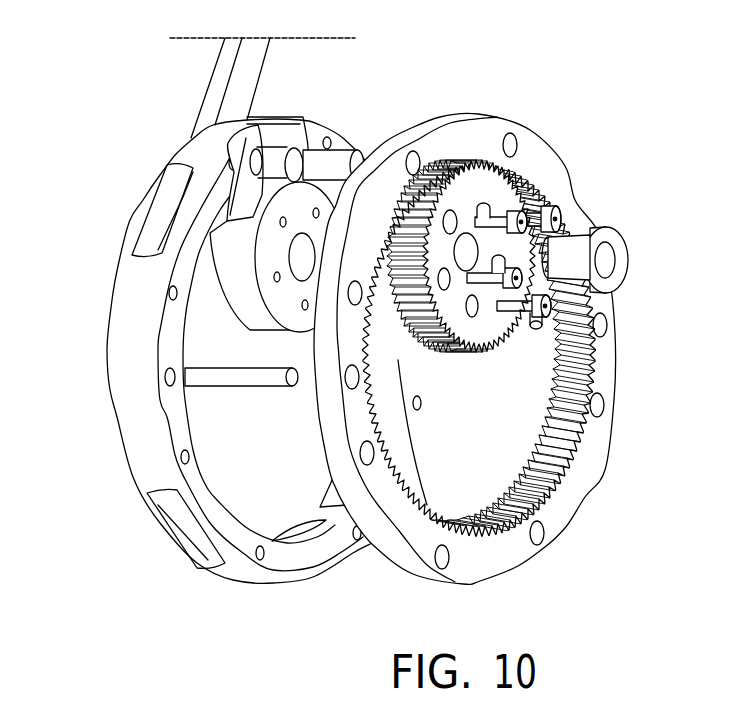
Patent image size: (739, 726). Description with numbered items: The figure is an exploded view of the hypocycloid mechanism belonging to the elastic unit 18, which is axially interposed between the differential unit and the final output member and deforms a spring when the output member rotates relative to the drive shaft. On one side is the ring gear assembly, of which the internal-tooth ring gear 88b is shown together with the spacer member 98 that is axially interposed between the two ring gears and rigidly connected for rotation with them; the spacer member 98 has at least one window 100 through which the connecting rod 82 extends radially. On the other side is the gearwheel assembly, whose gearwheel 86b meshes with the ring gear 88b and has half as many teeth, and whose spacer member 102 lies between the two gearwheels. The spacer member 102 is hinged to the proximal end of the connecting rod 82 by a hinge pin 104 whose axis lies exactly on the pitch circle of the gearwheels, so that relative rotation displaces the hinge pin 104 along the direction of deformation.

The elastic unit 18 is at (575, 173).
The connecting rod 82 is at (212, 90).
The gearwheel 86b is at (482, 328).
The internal-tooth ring gear 88b is at (570, 500).
The spacer member 98 is at (307, 573).
The window 100 is at (160, 213).
The spacer member 102 is at (227, 290).
The hinge pin 104 is at (343, 148).